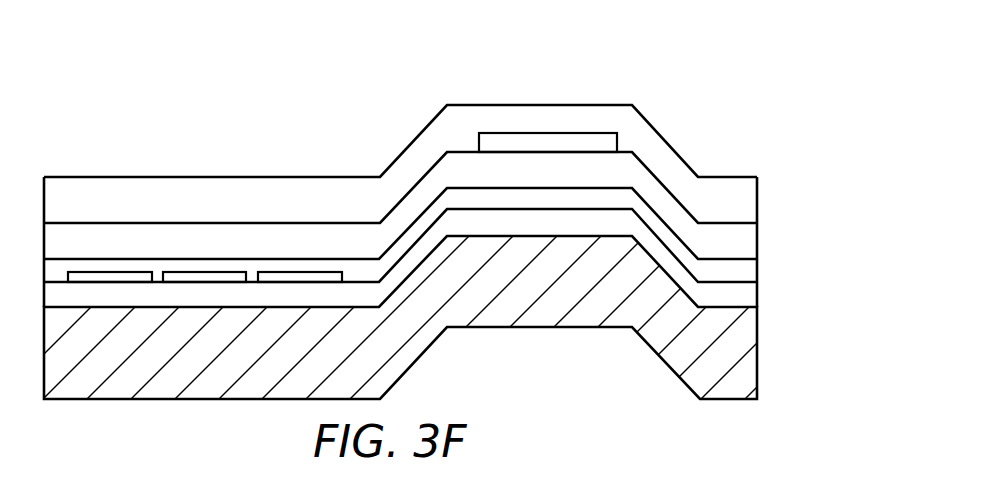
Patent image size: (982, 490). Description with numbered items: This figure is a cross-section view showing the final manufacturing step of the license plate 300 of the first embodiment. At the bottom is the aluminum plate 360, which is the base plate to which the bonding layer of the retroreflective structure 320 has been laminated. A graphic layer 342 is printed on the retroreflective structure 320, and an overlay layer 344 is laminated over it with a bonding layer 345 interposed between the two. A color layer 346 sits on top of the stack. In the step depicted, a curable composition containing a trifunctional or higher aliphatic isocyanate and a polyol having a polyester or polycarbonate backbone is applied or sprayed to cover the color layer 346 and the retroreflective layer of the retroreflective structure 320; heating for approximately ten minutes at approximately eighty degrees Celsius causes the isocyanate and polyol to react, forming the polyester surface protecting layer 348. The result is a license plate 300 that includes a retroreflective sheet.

The license plate 300 is at (703, 104).
The retroreflective structure 320 is at (762, 282).
The graphic layer 342 is at (200, 277).
The overlay layer 344 is at (733, 249).
The bonding layer 345 is at (733, 274).
The color layer 346 is at (554, 140).
The polyester surface protecting layer 348 is at (733, 200).
The aluminum plate 360 is at (733, 380).